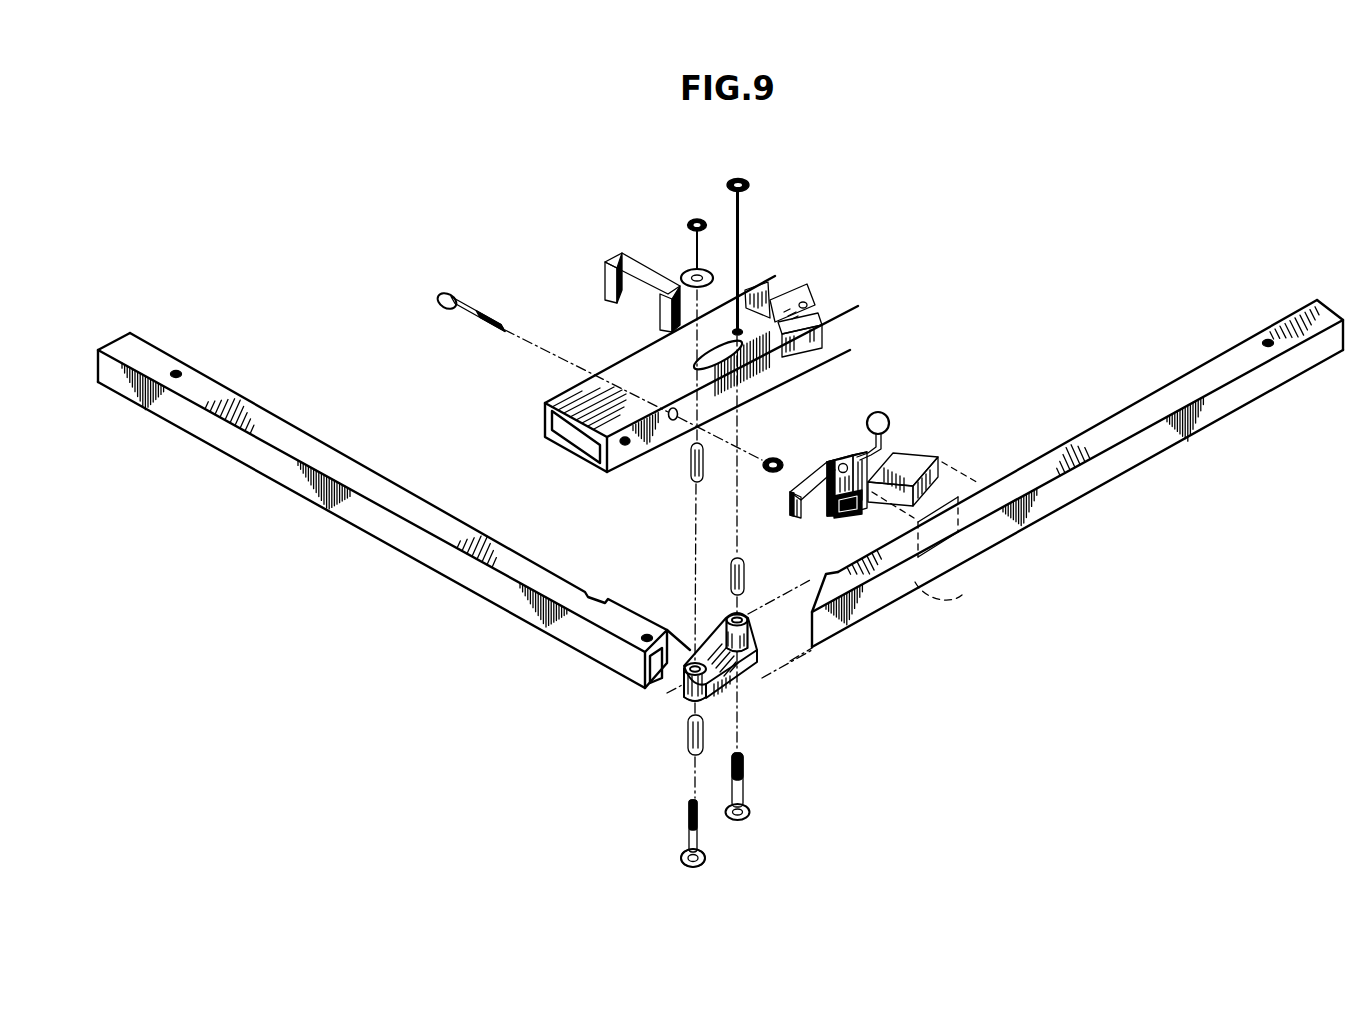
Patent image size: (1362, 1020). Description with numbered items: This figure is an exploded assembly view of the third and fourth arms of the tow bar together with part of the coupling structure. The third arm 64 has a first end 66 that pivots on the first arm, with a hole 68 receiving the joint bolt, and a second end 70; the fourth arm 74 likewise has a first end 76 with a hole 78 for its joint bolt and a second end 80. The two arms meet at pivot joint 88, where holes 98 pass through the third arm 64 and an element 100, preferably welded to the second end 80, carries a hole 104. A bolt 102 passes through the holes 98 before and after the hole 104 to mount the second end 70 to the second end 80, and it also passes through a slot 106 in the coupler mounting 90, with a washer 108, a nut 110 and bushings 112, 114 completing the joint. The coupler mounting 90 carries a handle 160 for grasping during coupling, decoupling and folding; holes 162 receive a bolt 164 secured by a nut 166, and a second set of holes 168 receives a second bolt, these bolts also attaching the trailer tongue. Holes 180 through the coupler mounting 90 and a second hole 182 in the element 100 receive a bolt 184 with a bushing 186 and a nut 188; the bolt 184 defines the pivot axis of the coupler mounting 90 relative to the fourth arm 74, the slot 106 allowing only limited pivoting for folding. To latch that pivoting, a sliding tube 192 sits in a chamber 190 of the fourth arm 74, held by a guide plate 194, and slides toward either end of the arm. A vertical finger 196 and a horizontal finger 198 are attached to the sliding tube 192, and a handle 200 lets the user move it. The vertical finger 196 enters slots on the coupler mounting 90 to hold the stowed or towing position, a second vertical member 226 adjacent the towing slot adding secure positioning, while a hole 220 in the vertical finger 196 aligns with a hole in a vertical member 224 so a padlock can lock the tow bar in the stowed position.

The third arm 64 is at (394, 510).
The first end of third arm 66 is at (143, 430).
The hole 68 is at (212, 355).
The second end of third arm 70 is at (526, 644).
The fourth arm 74 is at (1077, 473).
The first end of fourth arm 76 is at (1294, 383).
The hole 78 is at (1268, 340).
The second end of fourth arm 80 is at (880, 603).
The pivot joint 88 is at (666, 879).
The coupler mounting 90 is at (543, 404).
The holes 98 is at (636, 601).
The element 100 is at (754, 670).
The bolt 102 is at (730, 834).
The hole 104 is at (642, 700).
The slot 106 is at (745, 385).
The washer 108 is at (655, 252).
The nut 110 is at (676, 202).
The bushing 112 is at (660, 484).
The bushing 114 is at (639, 766).
The handle 160 is at (596, 291).
The holes 162 is at (618, 372).
The bolt 164 is at (441, 292).
The nut 166 is at (780, 458).
The holes 168 is at (625, 445).
The holes 180 is at (734, 322).
The second hole 182 is at (768, 610).
The bolt 184 is at (744, 780).
The bushing 186 is at (768, 557).
The nut 188 is at (773, 170).
The chamber 190 is at (961, 603).
The sliding tube 192 is at (940, 467).
The guide plate 194 is at (956, 525).
The vertical finger 196 is at (870, 443).
The horizontal finger 198 is at (739, 510).
The handle 200 is at (916, 427).
The hole 220 is at (836, 526).
The vertical member 224 is at (821, 292).
The second vertical member 226 is at (845, 333).